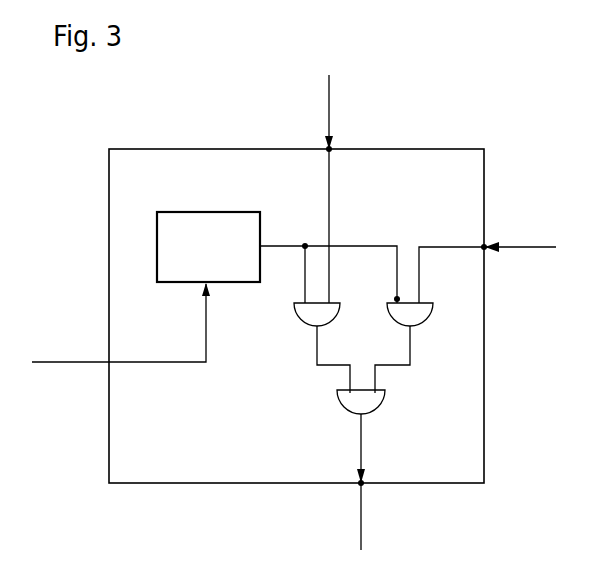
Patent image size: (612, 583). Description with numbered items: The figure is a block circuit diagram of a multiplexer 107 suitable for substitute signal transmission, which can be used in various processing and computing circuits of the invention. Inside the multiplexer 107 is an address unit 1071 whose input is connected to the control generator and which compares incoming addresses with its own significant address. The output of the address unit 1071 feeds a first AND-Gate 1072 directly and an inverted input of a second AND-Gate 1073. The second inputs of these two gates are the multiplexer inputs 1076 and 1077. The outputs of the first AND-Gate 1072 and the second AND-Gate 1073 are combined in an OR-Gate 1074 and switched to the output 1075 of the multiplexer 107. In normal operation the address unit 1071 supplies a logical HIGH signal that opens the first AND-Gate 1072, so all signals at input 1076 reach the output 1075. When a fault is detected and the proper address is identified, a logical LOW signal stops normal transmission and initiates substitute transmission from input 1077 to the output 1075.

The multiplexer 107 is at (225, 160).
The address unit 1071 is at (244, 222).
The first AND-Gate 1072 is at (312, 315).
The second AND-Gate 1073 is at (428, 316).
The OR-Gate 1074 is at (381, 395).
The output 1075 is at (360, 486).
The input 1076 is at (333, 147).
The input 1077 is at (486, 245).